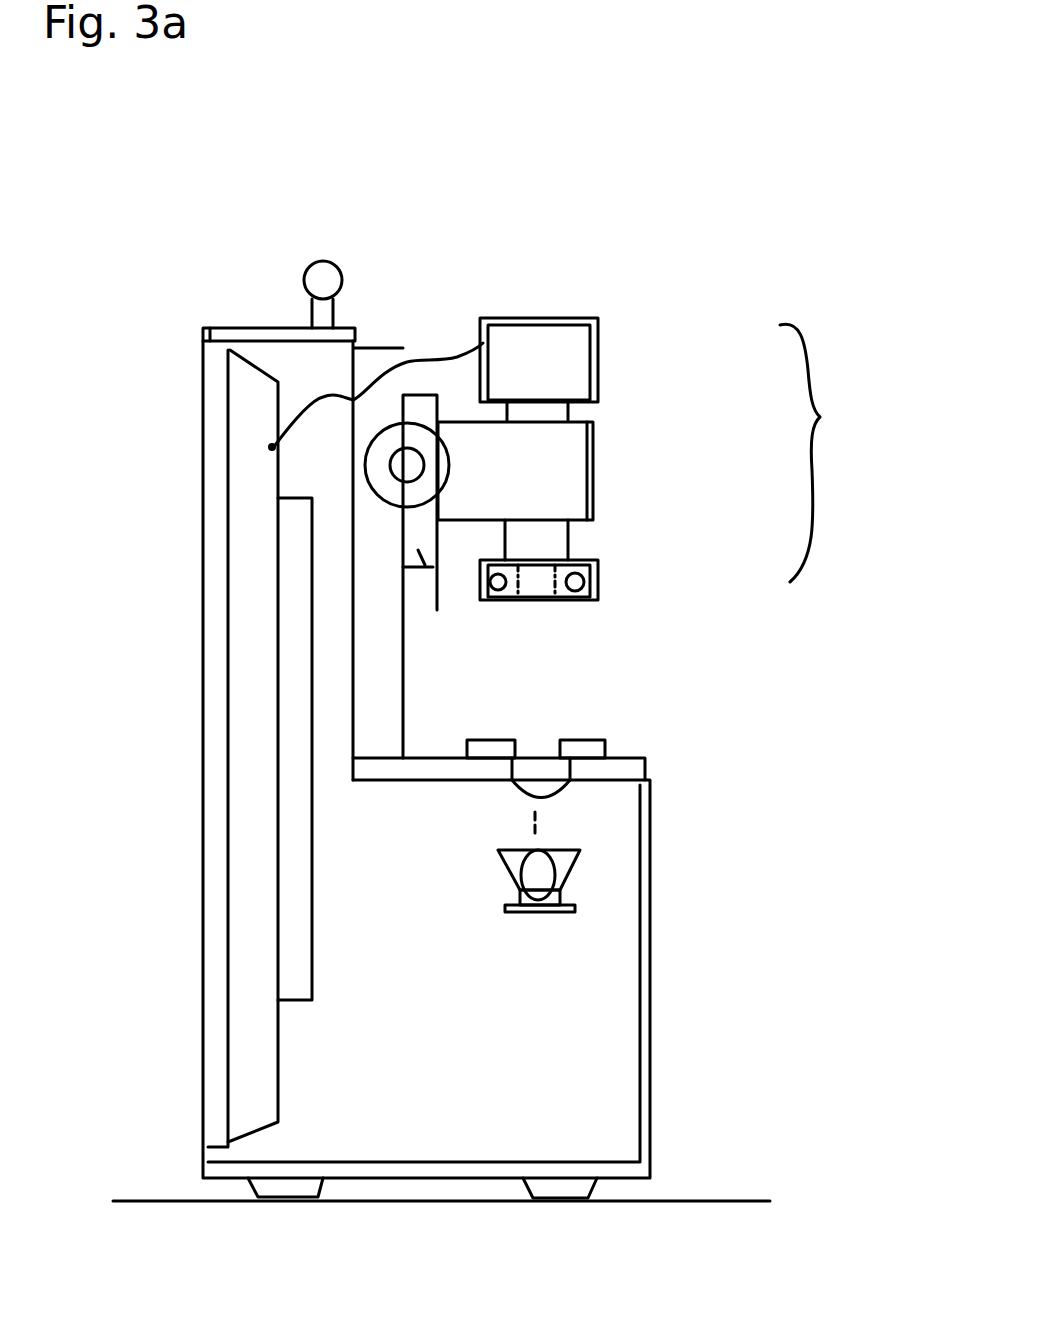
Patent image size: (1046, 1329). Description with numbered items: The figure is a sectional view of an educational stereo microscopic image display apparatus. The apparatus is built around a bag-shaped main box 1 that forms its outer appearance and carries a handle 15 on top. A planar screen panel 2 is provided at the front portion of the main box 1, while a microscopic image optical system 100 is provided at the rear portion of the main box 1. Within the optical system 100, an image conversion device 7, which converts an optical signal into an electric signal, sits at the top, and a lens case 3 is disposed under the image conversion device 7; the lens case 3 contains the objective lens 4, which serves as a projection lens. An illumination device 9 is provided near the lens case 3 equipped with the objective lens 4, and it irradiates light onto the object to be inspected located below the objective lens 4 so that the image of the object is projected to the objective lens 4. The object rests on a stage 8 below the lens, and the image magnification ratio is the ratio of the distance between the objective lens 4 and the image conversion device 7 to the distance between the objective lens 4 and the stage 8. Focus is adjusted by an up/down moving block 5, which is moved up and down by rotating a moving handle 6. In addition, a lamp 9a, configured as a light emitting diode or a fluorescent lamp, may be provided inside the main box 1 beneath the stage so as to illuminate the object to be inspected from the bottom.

The main box 1 is at (592, 1092).
The planar screen panel 2 is at (250, 832).
The lens case 3 is at (553, 540).
The objective lens 4 is at (537, 600).
The up/down moving block 5 is at (430, 576).
The moving handle 6 is at (377, 482).
The image conversion device 7 is at (548, 368).
The stage 8 is at (580, 748).
The illumination device 9 is at (598, 572).
The lamp 9a is at (583, 863).
The handle 15 is at (313, 262).
The microscopic image optical system 100 is at (857, 453).